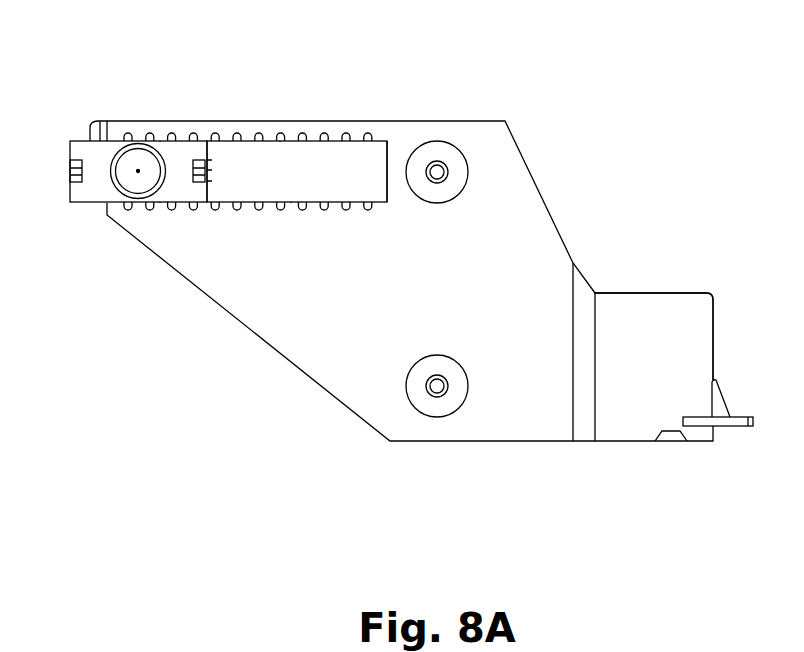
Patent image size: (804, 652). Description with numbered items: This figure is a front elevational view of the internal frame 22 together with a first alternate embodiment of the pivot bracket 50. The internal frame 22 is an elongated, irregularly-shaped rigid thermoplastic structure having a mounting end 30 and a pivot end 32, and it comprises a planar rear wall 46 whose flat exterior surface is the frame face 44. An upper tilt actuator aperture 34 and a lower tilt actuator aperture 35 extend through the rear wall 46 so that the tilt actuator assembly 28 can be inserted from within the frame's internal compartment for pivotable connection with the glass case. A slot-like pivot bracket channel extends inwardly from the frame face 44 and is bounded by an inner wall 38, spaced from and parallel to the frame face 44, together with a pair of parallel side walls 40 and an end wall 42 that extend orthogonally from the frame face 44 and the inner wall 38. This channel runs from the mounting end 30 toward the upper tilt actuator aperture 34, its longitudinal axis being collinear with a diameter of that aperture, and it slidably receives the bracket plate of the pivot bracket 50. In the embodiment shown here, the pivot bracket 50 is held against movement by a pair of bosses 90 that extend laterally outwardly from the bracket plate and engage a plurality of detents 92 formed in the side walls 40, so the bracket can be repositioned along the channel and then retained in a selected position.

The internal frame 22 is at (668, 291).
The tilt actuator assembly 28 is at (437, 172).
The mounting end 30 is at (128, 267).
The pivot end 32 is at (727, 428).
The upper tilt actuator aperture 34 is at (458, 153).
The lower tilt actuator aperture 35 is at (422, 408).
The inner wall 38 is at (340, 160).
The side walls 40 is at (282, 143).
The end wall 42 is at (388, 162).
The frame face 44 is at (283, 287).
The rear wall 46 is at (503, 225).
The pivot bracket 50 is at (77, 203).
The bosses 90 is at (145, 138).
The detents 92 is at (173, 138).